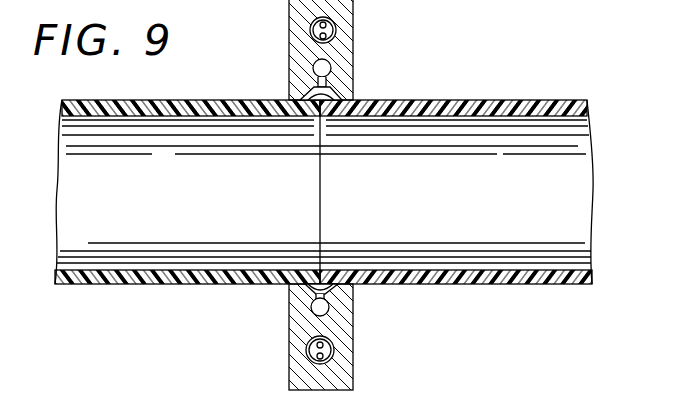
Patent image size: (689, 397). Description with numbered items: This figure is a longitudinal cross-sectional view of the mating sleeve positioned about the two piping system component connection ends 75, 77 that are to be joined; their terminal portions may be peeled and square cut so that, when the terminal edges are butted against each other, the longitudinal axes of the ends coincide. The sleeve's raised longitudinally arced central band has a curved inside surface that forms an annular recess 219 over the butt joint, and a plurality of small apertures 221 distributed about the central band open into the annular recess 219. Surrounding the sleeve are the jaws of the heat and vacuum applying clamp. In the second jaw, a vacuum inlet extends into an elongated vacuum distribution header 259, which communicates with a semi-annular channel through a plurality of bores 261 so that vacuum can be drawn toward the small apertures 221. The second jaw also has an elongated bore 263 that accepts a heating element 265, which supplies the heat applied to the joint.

The piping system component connection end 75 is at (96, 100).
The piping system component connection end 77 is at (549, 100).
The annular recess 219 is at (327, 282).
The small apertures 221 is at (318, 290).
The vacuum distribution header 259 is at (331, 68).
The bores 261 is at (332, 87).
The elongated bore 263 is at (338, 27).
The heating element 265 is at (311, 23).